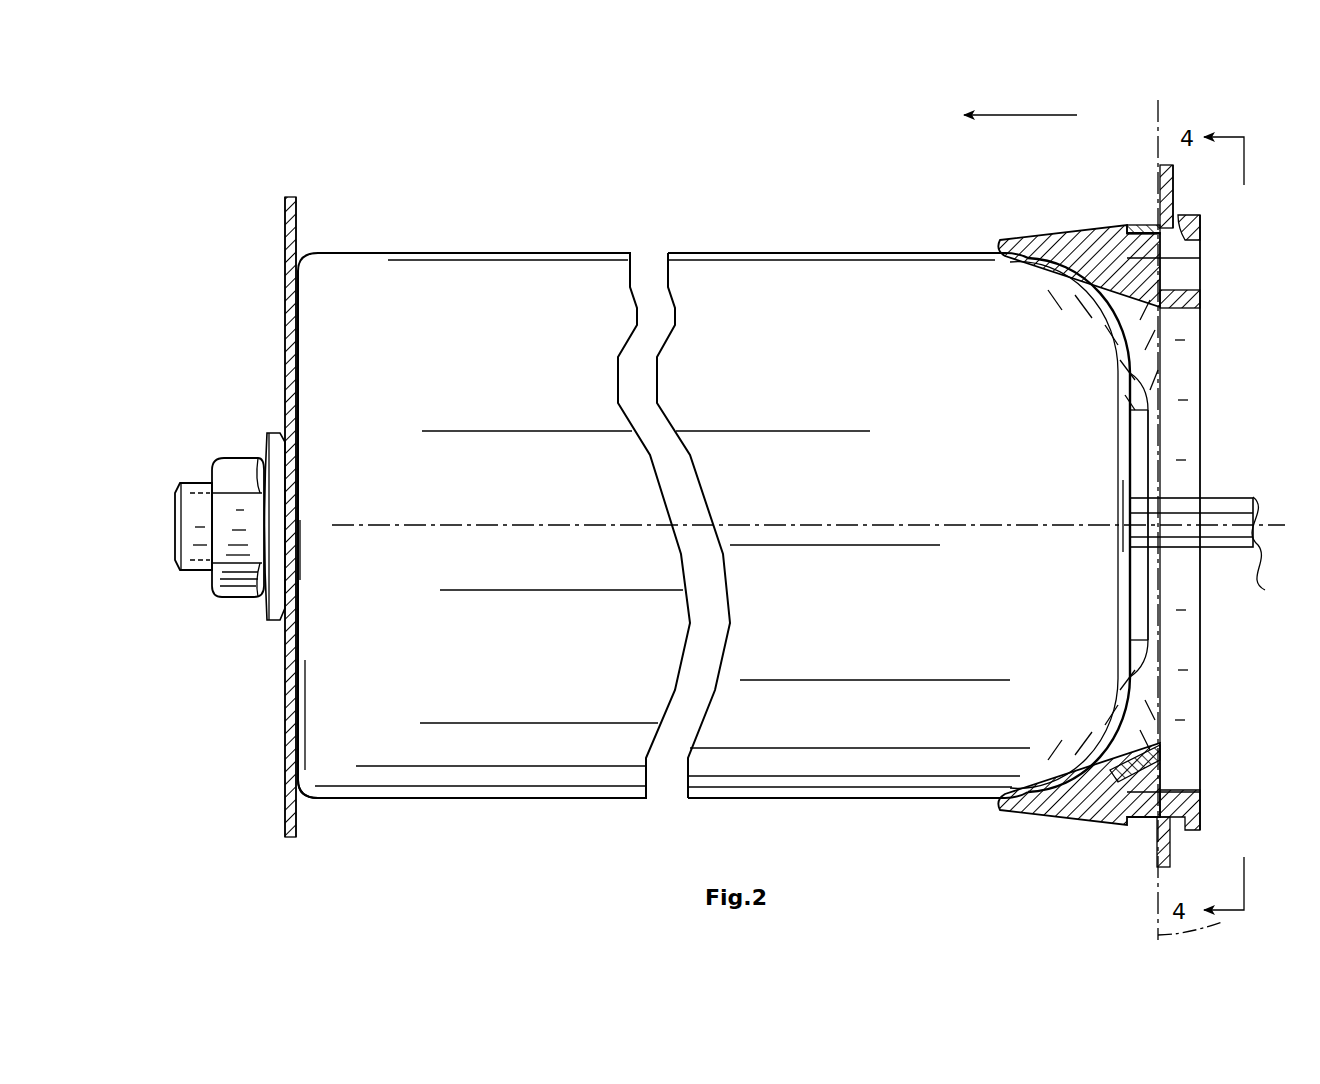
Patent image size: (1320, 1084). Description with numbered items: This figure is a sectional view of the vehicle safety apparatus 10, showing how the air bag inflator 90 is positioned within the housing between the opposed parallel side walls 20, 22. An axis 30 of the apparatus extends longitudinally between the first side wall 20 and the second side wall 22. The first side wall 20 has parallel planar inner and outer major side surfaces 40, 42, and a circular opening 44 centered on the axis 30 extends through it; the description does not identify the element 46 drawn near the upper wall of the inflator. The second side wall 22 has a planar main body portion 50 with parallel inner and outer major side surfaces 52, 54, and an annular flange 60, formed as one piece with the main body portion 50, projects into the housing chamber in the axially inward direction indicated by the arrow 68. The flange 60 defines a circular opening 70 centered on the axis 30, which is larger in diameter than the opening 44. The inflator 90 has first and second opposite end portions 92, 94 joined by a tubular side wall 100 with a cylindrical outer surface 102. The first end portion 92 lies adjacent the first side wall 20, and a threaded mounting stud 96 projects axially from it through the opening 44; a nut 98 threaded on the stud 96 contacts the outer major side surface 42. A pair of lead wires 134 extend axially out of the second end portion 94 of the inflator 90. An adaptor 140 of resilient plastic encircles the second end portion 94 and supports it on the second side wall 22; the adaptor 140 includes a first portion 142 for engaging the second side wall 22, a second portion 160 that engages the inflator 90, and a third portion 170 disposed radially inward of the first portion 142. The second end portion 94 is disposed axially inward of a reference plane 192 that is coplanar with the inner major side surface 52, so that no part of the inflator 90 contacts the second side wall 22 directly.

The vehicle safety apparatus 10 is at (791, 205).
The first side wall 20 is at (283, 274).
The second side wall 22 is at (1182, 178).
The axis 30 is at (892, 520).
The inner major side surface 40 is at (297, 232).
The outer major side surface 42 is at (285, 231).
The circular opening 44 is at (296, 573).
The flexible sleeve 46 is at (418, 240).
The main body portion 50 is at (1157, 187).
The inner major side surface 52 is at (1157, 852).
The outer major side surface 54 is at (1175, 850).
The annular flange 60 is at (1150, 225).
The arrow 68 is at (1035, 115).
The circular opening 70 is at (1170, 428).
The inflator 90 is at (523, 246).
The first end portion 92 is at (313, 698).
The second end portion 94 is at (1123, 715).
The threaded mounting stud 96 is at (197, 572).
The nut 98 is at (248, 457).
The side wall 100 is at (812, 797).
The outer surface 102 is at (881, 245).
The lead wires 134 is at (1206, 547).
The adaptor 140 is at (1015, 233).
The first portion 142 is at (1200, 247).
The second portion 160 is at (1060, 258).
The third portion 170 is at (1213, 297).
The reference plane 192 is at (1215, 930).